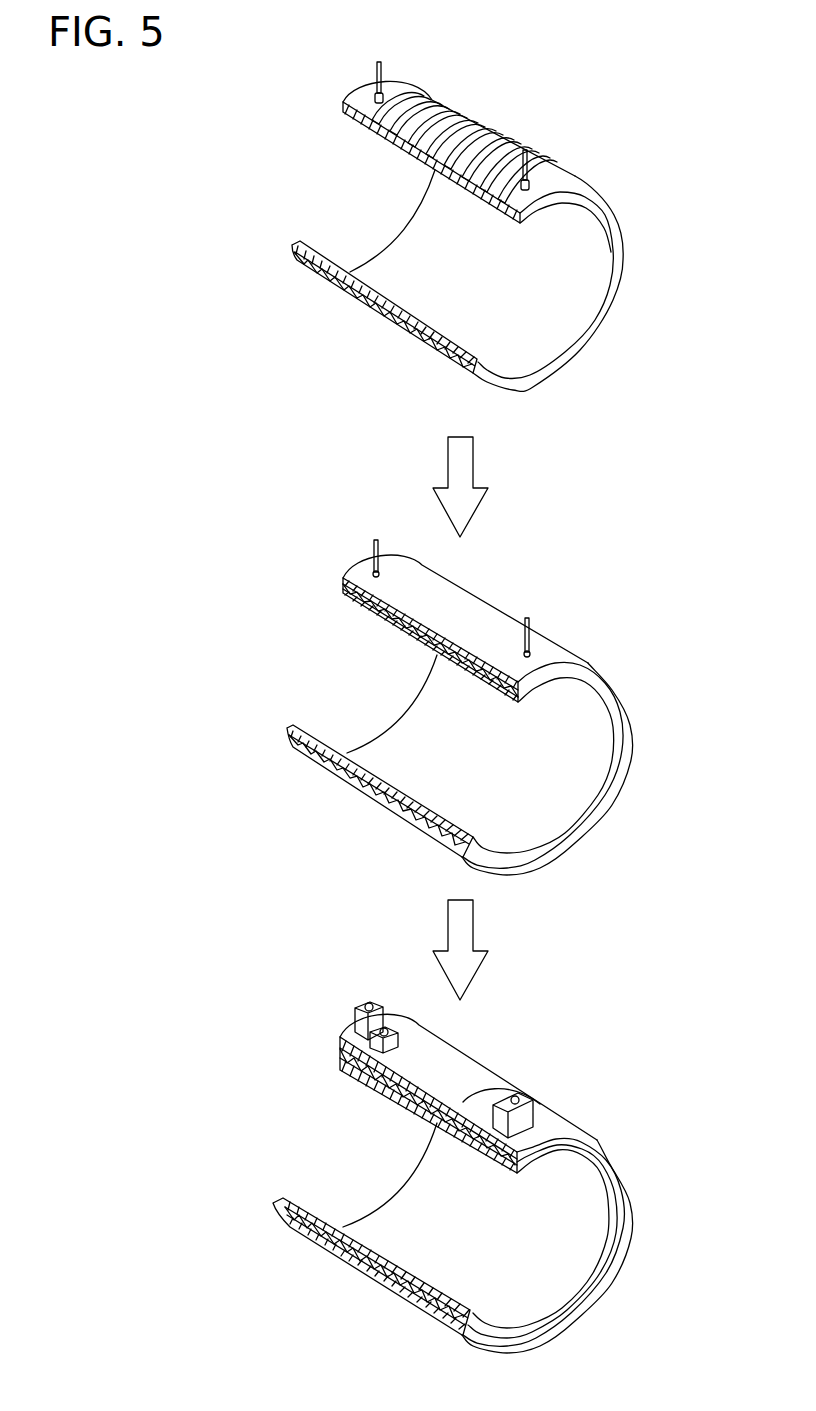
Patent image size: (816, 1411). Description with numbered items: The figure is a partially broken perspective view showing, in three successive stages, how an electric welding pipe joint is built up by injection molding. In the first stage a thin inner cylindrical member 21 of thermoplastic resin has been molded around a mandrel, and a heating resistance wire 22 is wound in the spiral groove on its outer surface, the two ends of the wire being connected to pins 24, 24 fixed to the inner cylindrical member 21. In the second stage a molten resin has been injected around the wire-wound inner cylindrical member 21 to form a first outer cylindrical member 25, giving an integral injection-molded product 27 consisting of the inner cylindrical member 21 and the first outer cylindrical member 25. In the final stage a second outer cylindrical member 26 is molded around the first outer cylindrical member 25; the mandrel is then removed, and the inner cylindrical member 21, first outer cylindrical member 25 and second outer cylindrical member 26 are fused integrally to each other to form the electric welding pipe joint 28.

The inner cylindrical member 21 is at (343, 112).
The heating resistance wire 22 is at (407, 630).
The pins 24 is at (382, 72).
The first outer cylindrical member 25 is at (343, 578).
The second outer cylindrical member 26 is at (472, 1067).
The injection-molded product 27 is at (610, 630).
The electric welding pipe joint 28 is at (633, 1099).